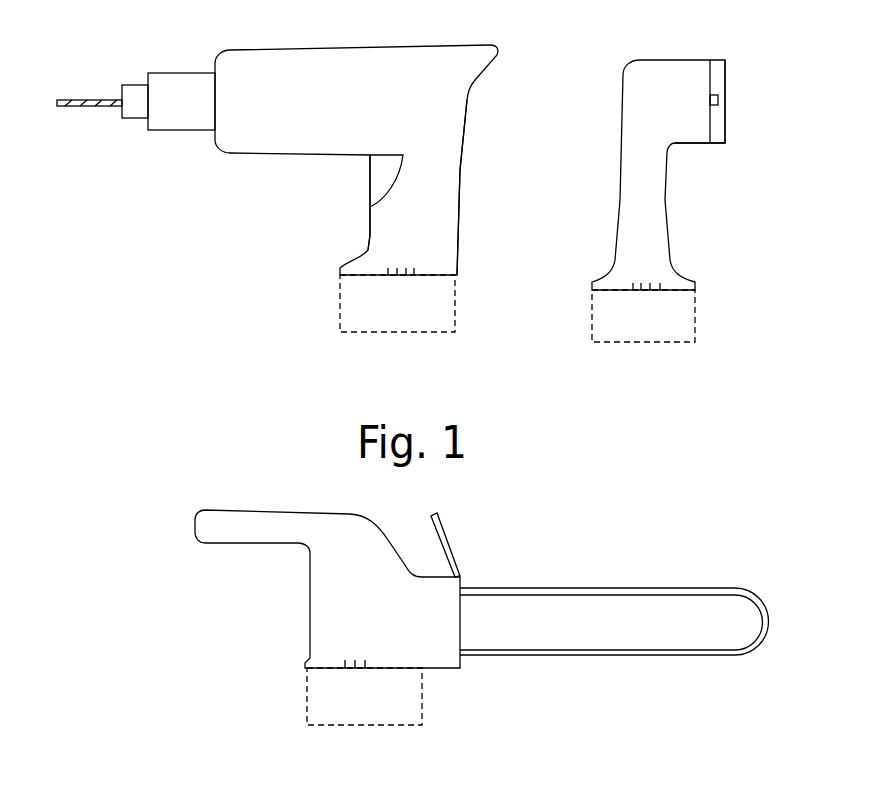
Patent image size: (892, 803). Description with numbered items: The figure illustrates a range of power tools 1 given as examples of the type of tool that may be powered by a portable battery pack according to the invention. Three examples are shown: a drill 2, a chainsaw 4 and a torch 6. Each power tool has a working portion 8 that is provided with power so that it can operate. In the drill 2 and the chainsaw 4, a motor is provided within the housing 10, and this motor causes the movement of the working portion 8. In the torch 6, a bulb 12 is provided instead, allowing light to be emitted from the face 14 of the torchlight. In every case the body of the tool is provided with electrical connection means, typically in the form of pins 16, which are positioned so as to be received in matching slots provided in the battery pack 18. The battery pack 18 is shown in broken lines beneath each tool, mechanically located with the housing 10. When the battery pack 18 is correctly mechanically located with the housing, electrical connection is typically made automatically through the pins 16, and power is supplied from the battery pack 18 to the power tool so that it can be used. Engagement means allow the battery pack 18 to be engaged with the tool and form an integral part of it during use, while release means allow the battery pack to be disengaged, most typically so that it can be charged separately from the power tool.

The power tools 1 is at (495, 38).
The drill 2 is at (303, 152).
The chainsaw 4 is at (435, 650).
The torch 6 is at (656, 77).
The working portion 8 is at (85, 102).
The housing 10 is at (437, 158).
The bulb 12 is at (713, 95).
The face 14 is at (727, 125).
The pins 16 is at (386, 268).
The battery pack 18 is at (388, 325).